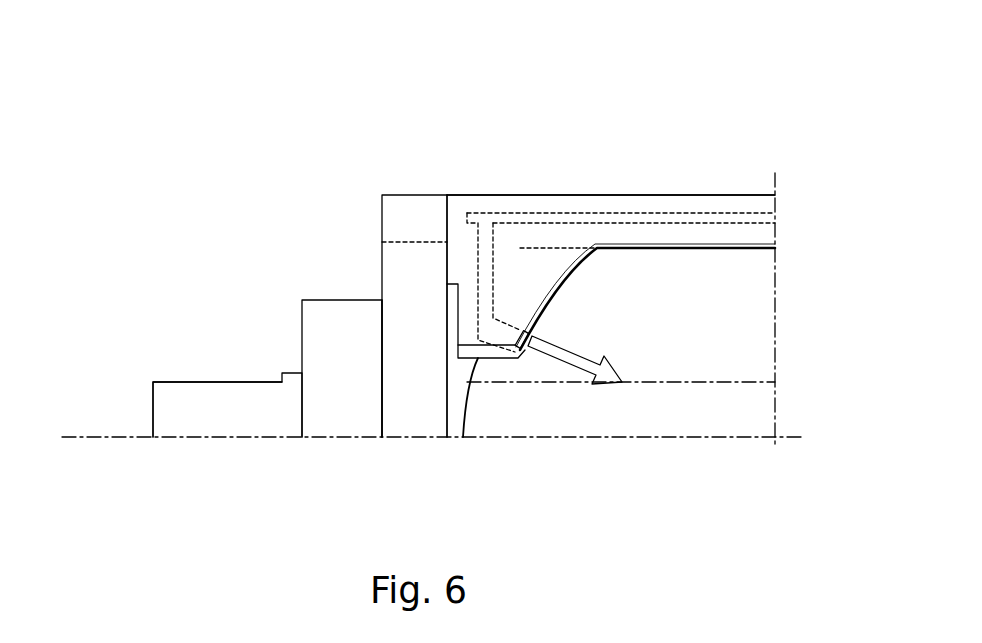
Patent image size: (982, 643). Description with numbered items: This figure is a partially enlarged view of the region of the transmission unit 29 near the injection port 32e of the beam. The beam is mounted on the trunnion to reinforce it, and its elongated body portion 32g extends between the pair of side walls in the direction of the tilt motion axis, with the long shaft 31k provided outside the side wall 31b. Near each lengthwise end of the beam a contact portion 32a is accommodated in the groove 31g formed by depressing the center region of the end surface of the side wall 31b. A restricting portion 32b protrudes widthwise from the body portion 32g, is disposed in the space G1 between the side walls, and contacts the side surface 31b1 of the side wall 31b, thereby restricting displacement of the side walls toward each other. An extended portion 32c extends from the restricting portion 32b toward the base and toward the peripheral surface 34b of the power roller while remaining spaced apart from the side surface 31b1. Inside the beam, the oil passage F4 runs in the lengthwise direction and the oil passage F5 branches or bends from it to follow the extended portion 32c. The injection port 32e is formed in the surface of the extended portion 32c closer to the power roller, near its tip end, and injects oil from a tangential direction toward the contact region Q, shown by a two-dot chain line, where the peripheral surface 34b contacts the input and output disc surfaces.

The transmission unit 29 is at (218, 162).
The long shaft 31k is at (180, 380).
The side wall 31b is at (380, 317).
The side surface 31b1 is at (446, 330).
The groove 31g is at (445, 242).
The contact portion 32a is at (382, 222).
The restricting portion 32b is at (448, 204).
The body portion 32g is at (747, 195).
The extended portion 32c is at (552, 288).
The injection port 32e is at (521, 350).
The peripheral surface 34b is at (463, 410).
The oil passage F4 is at (677, 213).
The oil passage F5 is at (494, 300).
The space G1 is at (458, 373).
The contact region Q is at (717, 382).